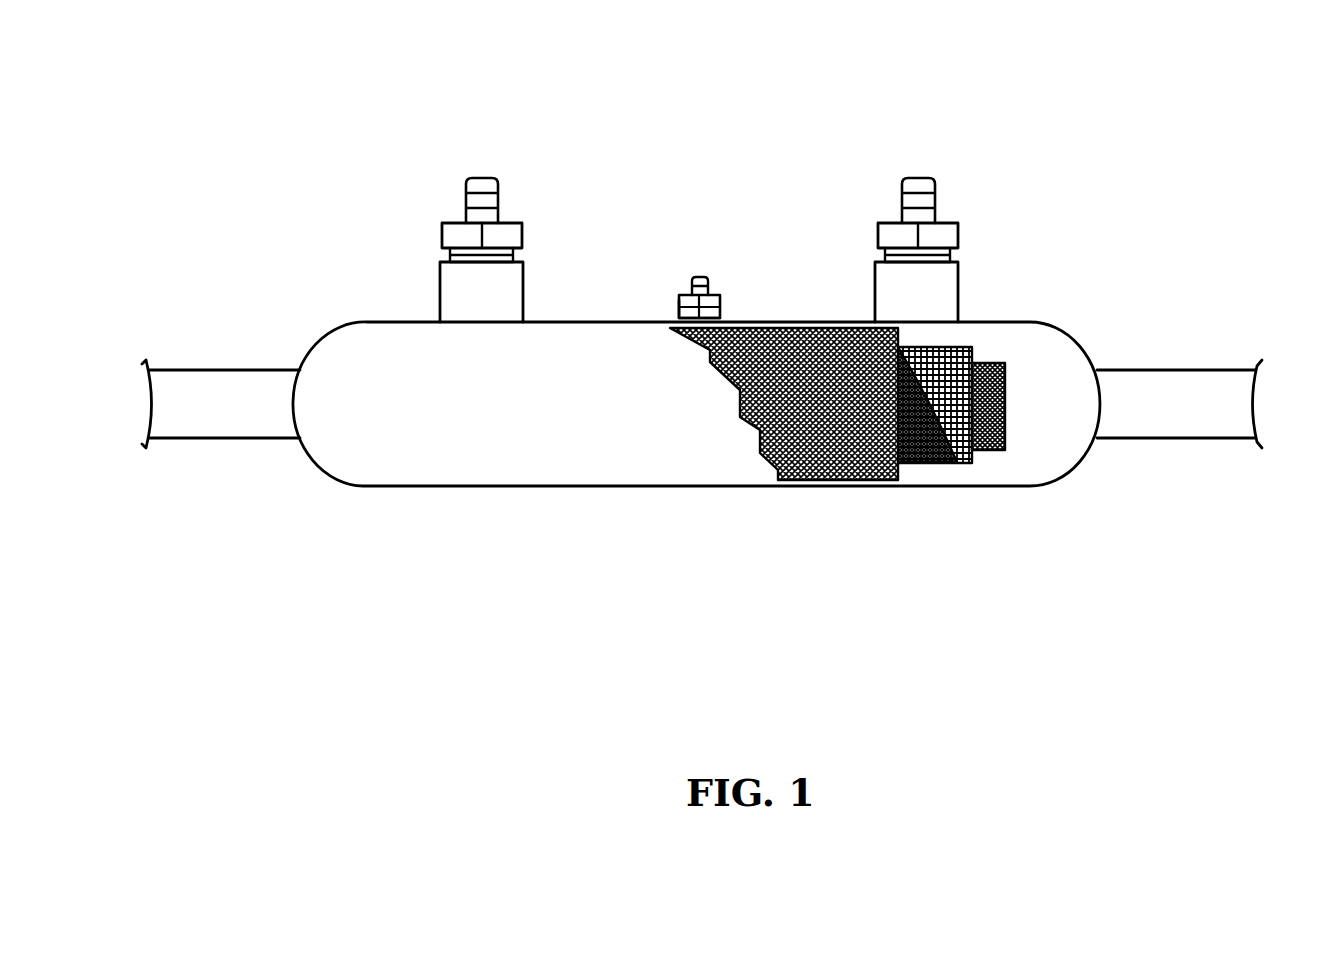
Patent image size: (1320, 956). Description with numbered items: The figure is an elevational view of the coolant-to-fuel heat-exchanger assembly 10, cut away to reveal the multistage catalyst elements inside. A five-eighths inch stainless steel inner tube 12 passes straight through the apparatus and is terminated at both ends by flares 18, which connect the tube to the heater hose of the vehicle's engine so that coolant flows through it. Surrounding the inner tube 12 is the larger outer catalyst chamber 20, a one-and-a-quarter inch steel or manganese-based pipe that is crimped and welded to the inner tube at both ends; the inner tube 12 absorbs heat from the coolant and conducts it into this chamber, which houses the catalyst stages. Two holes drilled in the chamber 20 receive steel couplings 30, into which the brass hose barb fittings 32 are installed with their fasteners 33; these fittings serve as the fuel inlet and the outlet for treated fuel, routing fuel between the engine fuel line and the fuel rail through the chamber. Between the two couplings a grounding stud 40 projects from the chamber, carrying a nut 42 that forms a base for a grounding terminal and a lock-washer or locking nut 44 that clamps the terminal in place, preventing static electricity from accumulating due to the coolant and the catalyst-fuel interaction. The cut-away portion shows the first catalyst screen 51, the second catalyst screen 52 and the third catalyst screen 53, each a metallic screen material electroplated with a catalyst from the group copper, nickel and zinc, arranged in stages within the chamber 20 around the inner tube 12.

The assembly 10 is at (292, 165).
The stainless steel inner tube 12 is at (178, 420).
The flares 18 is at (145, 362).
The outer catalyst chamber 20 is at (337, 420).
The coupling 30 is at (440, 293).
The hose barb fitting 32 is at (494, 178).
The fastener 33 is at (448, 223).
The grounding stud 40 is at (708, 276).
The nut 42 is at (688, 297).
The lock-washer or locking nut 44 is at (722, 315).
The first metallic screen material with electroplated catalyst 51 is at (990, 450).
The second metallic screen material with electroplated catalyst 52 is at (962, 462).
The third metallic screen material with electroplated catalyst 53 is at (890, 481).